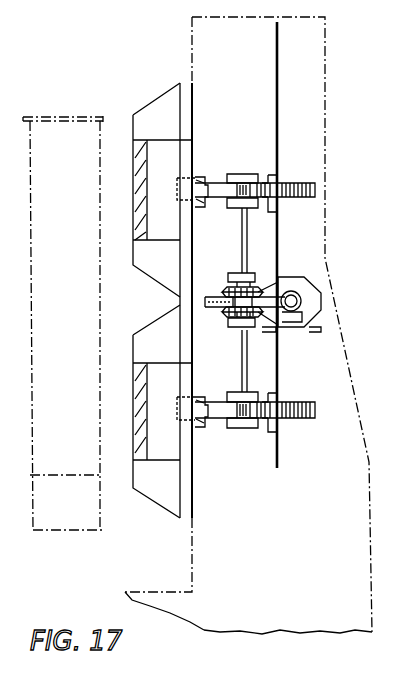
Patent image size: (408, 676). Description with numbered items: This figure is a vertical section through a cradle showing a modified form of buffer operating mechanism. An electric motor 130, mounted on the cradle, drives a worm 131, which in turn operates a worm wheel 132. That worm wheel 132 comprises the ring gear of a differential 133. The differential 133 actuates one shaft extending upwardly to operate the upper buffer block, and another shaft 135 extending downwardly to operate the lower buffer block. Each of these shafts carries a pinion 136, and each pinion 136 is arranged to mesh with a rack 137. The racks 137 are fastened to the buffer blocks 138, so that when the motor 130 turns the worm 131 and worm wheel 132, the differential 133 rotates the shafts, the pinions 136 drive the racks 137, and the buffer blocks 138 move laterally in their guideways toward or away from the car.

The electric motor 130 is at (318, 298).
The worm 131 is at (300, 308).
The worm wheel 132 is at (213, 307).
The differential 133 is at (264, 292).
The shaft 135 is at (245, 366).
The pinion 136 is at (247, 182).
The rack 137 is at (290, 183).
The buffer block 138 is at (155, 205).